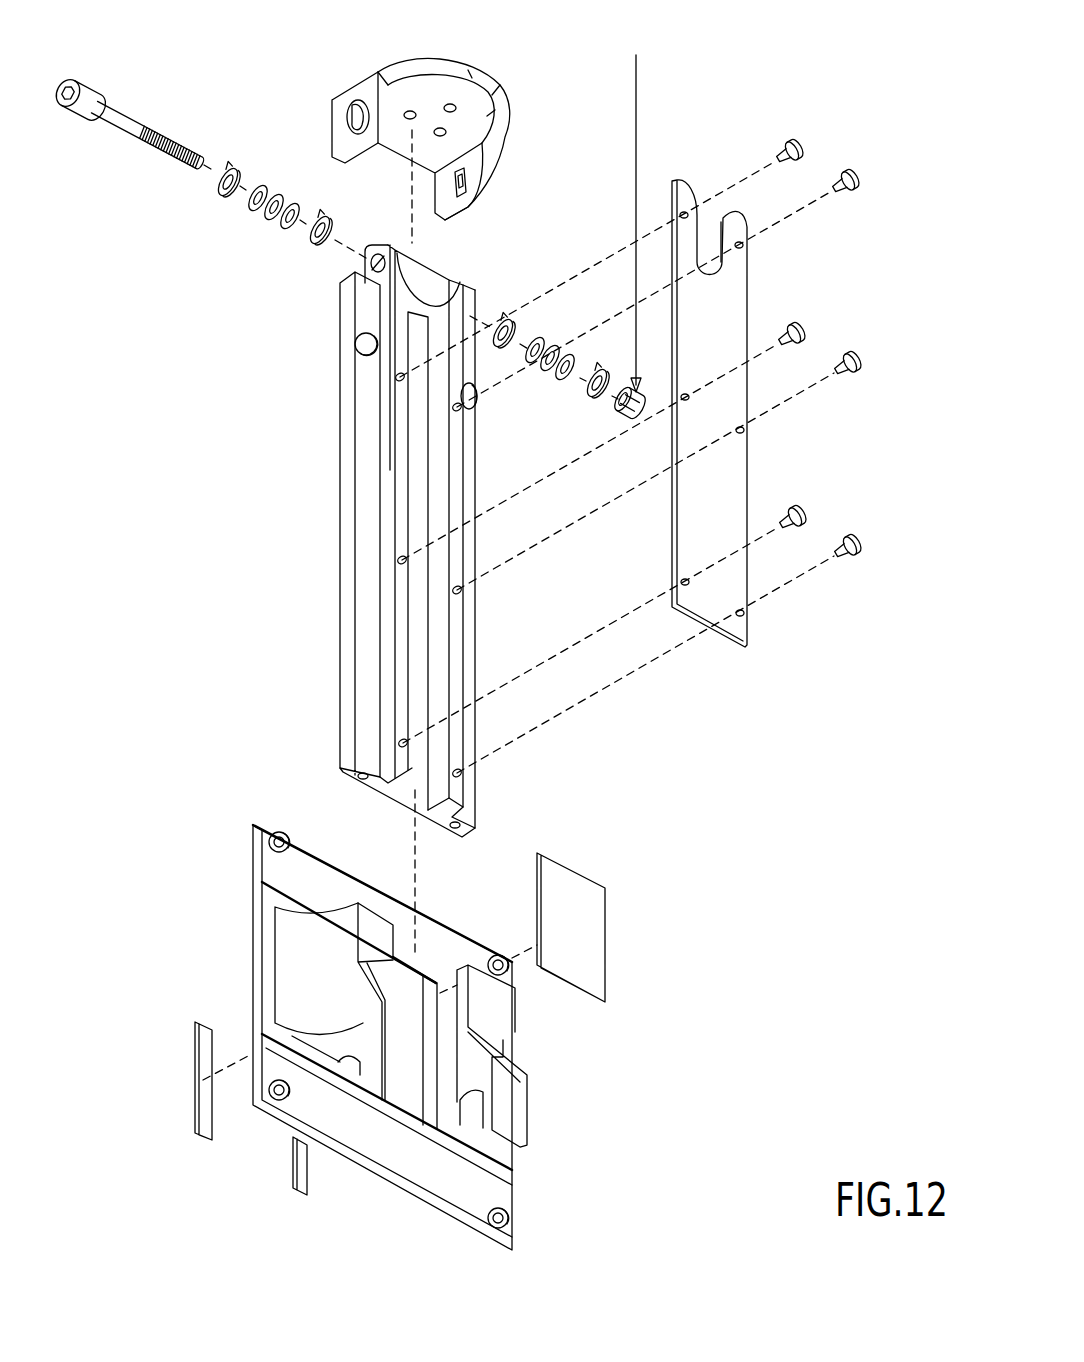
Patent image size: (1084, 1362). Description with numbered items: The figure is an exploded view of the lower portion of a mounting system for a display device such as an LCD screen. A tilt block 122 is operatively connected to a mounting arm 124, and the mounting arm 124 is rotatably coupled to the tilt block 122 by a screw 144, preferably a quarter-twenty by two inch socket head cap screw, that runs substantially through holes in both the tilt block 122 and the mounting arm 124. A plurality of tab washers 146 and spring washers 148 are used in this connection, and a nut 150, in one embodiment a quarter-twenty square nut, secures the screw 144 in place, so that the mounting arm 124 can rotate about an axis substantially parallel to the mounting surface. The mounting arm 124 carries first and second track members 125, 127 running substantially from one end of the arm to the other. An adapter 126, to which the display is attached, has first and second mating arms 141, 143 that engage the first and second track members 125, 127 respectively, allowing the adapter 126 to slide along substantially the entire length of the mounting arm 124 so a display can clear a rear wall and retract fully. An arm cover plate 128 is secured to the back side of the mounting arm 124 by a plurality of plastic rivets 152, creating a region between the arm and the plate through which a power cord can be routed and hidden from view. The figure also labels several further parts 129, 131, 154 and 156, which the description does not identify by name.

The tilt block 122 is at (398, 73).
The mounting arm 124 is at (345, 652).
The first track member 125 is at (392, 712).
The adapter 126 is at (510, 1022).
The second track member 127 is at (458, 683).
The arm cover plate 128 is at (735, 482).
The shelf 129 is at (340, 1062).
The notch 131 is at (457, 1097).
The first mating arm 141 is at (400, 1032).
The second mating arm 143 is at (517, 1100).
The screw 144 is at (82, 78).
The tab washers 146 is at (240, 166).
The spring washers 148 is at (283, 193).
The nut 150 is at (617, 410).
The plastic rivets 152 is at (798, 147).
The pad 154 is at (605, 958).
The pad 156 is at (195, 1107).